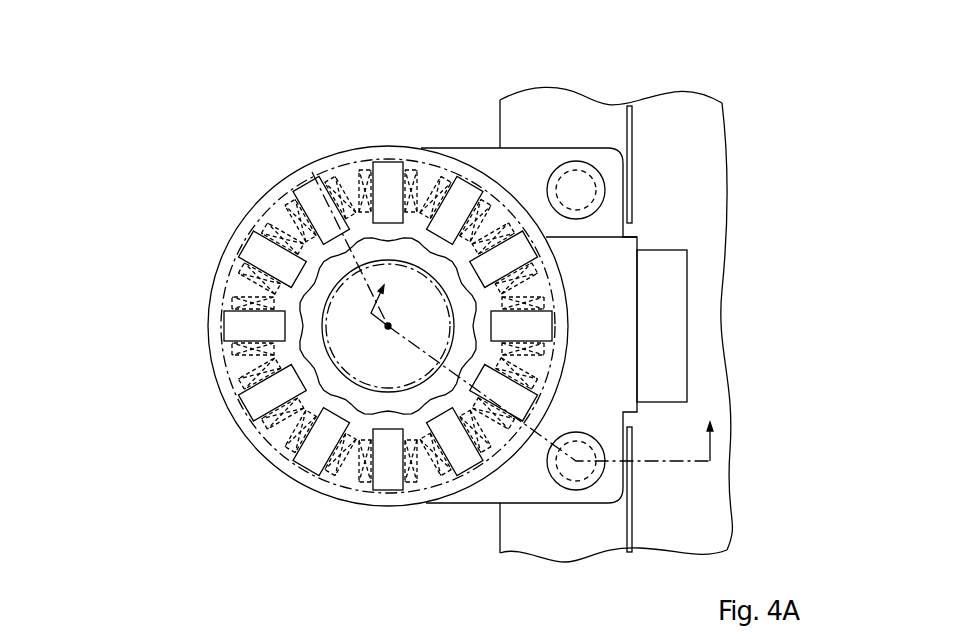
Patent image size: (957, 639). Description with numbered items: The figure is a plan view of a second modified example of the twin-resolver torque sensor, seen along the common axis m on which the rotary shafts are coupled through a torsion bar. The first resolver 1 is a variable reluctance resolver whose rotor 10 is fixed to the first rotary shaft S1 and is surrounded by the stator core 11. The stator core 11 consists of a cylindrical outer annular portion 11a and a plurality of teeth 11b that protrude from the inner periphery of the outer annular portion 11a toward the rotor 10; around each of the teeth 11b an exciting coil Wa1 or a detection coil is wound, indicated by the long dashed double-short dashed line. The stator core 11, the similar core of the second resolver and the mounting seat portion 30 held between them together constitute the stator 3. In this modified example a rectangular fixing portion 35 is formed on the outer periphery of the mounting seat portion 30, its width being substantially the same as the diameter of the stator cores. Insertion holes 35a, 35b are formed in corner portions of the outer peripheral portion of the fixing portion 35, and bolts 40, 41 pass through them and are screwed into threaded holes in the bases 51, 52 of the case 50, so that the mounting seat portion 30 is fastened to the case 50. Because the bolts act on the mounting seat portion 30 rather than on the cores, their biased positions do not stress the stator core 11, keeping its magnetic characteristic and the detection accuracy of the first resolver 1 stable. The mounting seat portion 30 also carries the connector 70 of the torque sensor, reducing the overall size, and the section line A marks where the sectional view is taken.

The first resolver 1 is at (572, 52).
The stator 3 is at (359, 376).
The rotor 10 is at (393, 192).
The stator core 11 is at (301, 484).
The outer annular portion 11a is at (247, 437).
The teeth 11b is at (242, 385).
The mounting seat portion 30 is at (373, 507).
The first rotary shaft S1 is at (312, 172).
The exciting coil Wa1 is at (226, 299).
The axis m is at (388, 329).
The line A- A is at (533, 369).
The fixing portion 35 is at (473, 503).
The insertion hole 35a is at (590, 160).
The insertion hole 35b is at (588, 488).
The bolt 40 is at (566, 165).
The bolt 41 is at (556, 483).
The case 50 is at (729, 324).
The base 51 is at (634, 150).
The base 52 is at (634, 515).
The connector 70 is at (662, 250).